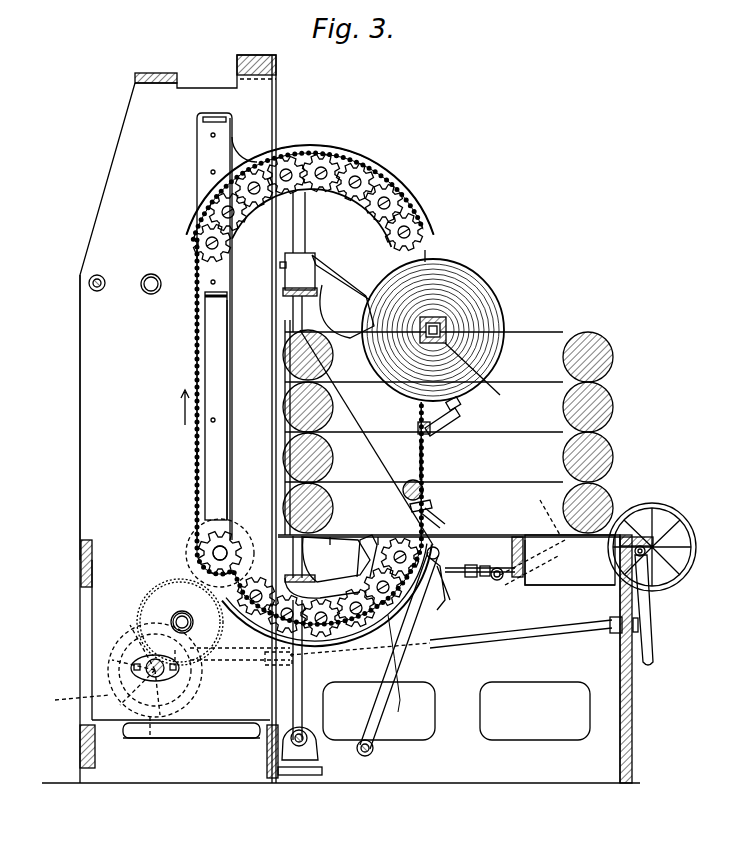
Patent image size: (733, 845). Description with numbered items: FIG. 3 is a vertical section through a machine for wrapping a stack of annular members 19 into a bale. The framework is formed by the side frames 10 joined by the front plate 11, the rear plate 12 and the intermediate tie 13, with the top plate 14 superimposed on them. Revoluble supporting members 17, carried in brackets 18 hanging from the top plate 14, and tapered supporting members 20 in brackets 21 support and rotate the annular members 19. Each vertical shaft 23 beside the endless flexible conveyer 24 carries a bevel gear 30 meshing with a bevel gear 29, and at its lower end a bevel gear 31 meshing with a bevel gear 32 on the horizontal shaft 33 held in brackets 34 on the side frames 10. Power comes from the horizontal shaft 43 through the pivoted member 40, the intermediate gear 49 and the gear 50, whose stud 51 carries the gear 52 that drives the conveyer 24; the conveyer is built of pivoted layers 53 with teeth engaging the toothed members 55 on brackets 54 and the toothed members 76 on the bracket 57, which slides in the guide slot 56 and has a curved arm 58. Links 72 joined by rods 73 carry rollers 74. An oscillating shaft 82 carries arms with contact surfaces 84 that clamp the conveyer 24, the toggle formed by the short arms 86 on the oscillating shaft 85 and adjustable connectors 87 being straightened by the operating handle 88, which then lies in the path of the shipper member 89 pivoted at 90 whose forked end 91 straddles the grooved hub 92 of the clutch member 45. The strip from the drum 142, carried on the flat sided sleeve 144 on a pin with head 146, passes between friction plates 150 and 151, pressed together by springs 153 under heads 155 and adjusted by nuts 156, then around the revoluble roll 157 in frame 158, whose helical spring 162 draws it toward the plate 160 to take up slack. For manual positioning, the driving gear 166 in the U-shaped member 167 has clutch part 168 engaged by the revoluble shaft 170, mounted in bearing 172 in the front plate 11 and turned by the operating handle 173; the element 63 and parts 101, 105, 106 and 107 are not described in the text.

The side frames 10 is at (533, 784).
The front plate 11 is at (626, 704).
The rear plate 12 is at (78, 742).
The intermediate tie 13 is at (95, 413).
The top plate 14 is at (650, 535).
The revoluble supporting members 17 is at (600, 588).
The brackets 18 is at (517, 536).
The annular members 19 is at (612, 415).
The supporting members 20 is at (334, 538).
The brackets 21 is at (380, 538).
The vertical shaft 23 is at (295, 233).
The endless flexible conveyer 24 is at (197, 352).
The bevel gear 29 is at (327, 567).
The bevel gear 30 is at (360, 560).
The bevel gear 31 is at (320, 752).
The bevel gear 32 is at (312, 731).
The horizontal shaft 33 is at (296, 748).
The brackets 34 is at (310, 776).
The pivoted member 40 is at (75, 700).
The horizontal shaft 43 is at (135, 660).
The clutch member 45 is at (122, 640).
The intermediate gear 49 is at (160, 585).
The gear 50 is at (190, 530).
The stud 51 is at (213, 553).
The gear 52 is at (228, 545).
The layers 53 is at (194, 262).
The brackets 54 is at (352, 630).
The toothed members 55 is at (262, 560).
The guide slot 56 is at (227, 333).
The bracket 57 is at (203, 150).
The curved arm 58 is at (345, 157).
The bolt 63 is at (89, 285).
The links 72 is at (400, 183).
The rods 73 is at (193, 415).
The rollers 74 is at (378, 180).
The toothed members 76 is at (258, 212).
The oscillating shaft 82 is at (374, 752).
The contact surfaces 84 is at (468, 580).
The oscillating shaft 85 is at (500, 580).
The short arms 86 is at (496, 582).
The adjustable connectors 87 is at (478, 580).
The operating handle 88 is at (540, 585).
The shipper member 89 is at (474, 604).
The pivot 90 is at (270, 668).
The forked end 91 is at (232, 668).
The grooved hub 92 is at (142, 735).
The lever 101 is at (341, 277).
The block 105 is at (285, 315).
The pin 106 is at (280, 290).
The cam 107 is at (346, 300).
The drum 142 is at (447, 330).
The flat sided sleeve 144 is at (487, 372).
The head 146 is at (440, 318).
The friction plate 150 is at (430, 448).
The friction plate 151 is at (414, 422).
The springs 153 is at (462, 420).
The heads 155 is at (462, 406).
The nuts 156 is at (406, 439).
The revoluble roll 157 is at (424, 488).
The frame 158 is at (432, 504).
The plate 160 is at (446, 516).
The helical spring 162 is at (438, 520).
The driving gear 166 is at (191, 749).
The U-shaped member 167 is at (197, 619).
The clutch part 168 is at (197, 626).
The revoluble shaft 170 is at (262, 640).
The bearing 172 is at (614, 634).
The operating handle 173 is at (655, 610).